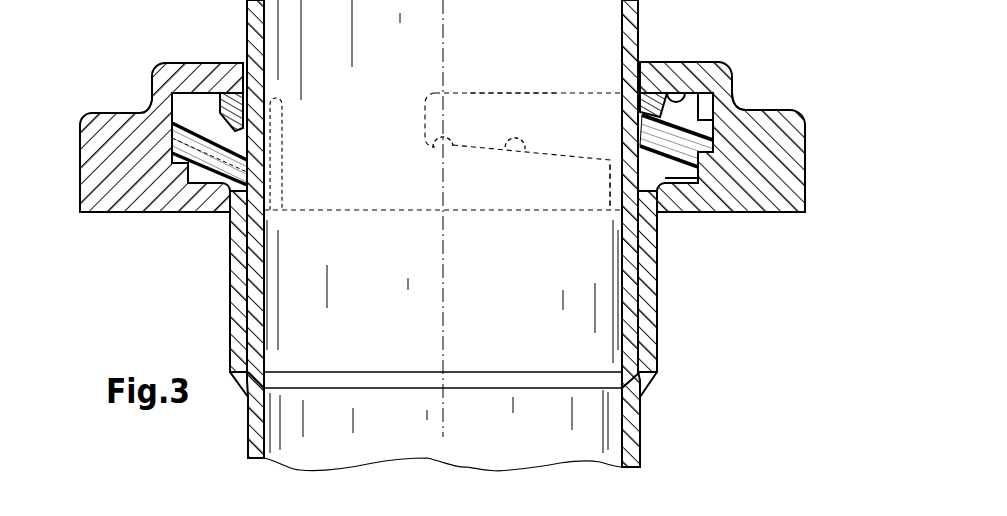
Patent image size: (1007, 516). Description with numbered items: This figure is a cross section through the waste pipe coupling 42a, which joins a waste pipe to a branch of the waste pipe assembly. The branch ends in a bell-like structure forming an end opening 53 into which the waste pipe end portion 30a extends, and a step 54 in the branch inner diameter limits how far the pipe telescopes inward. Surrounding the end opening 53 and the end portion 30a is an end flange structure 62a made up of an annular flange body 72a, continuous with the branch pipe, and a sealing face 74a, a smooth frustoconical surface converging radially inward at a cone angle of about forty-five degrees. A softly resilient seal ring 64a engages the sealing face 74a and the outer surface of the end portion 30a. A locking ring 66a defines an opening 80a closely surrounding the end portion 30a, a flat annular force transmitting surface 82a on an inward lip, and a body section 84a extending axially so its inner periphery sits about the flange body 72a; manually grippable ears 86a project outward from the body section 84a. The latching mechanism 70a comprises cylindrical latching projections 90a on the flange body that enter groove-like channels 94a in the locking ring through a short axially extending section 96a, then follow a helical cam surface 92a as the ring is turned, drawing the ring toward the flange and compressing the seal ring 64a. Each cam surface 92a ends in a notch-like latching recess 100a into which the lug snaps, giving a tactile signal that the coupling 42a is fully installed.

The waste pipe end portion 30a is at (628, 300).
The waste pipe coupling 42a is at (440, 151).
The end opening 53 is at (236, 177).
The step 54 is at (266, 378).
The end flange structure 62a is at (668, 156).
The seal ring 64a is at (644, 100).
The locking ring 66a is at (812, 160).
The latching mechanism 70a is at (718, 116).
The annular flange body 72a is at (213, 132).
The sealing face 74a is at (218, 117).
The opening 80a is at (644, 73).
The force transmitting surface 82a is at (682, 97).
The body section 84a is at (78, 183).
The manually grippable ears 86a is at (112, 150).
The latching projections 90a is at (177, 133).
The cam surface 92a is at (510, 148).
The channel 94a is at (500, 120).
The axially extending section 96a is at (610, 208).
The latching recess 100a is at (440, 146).